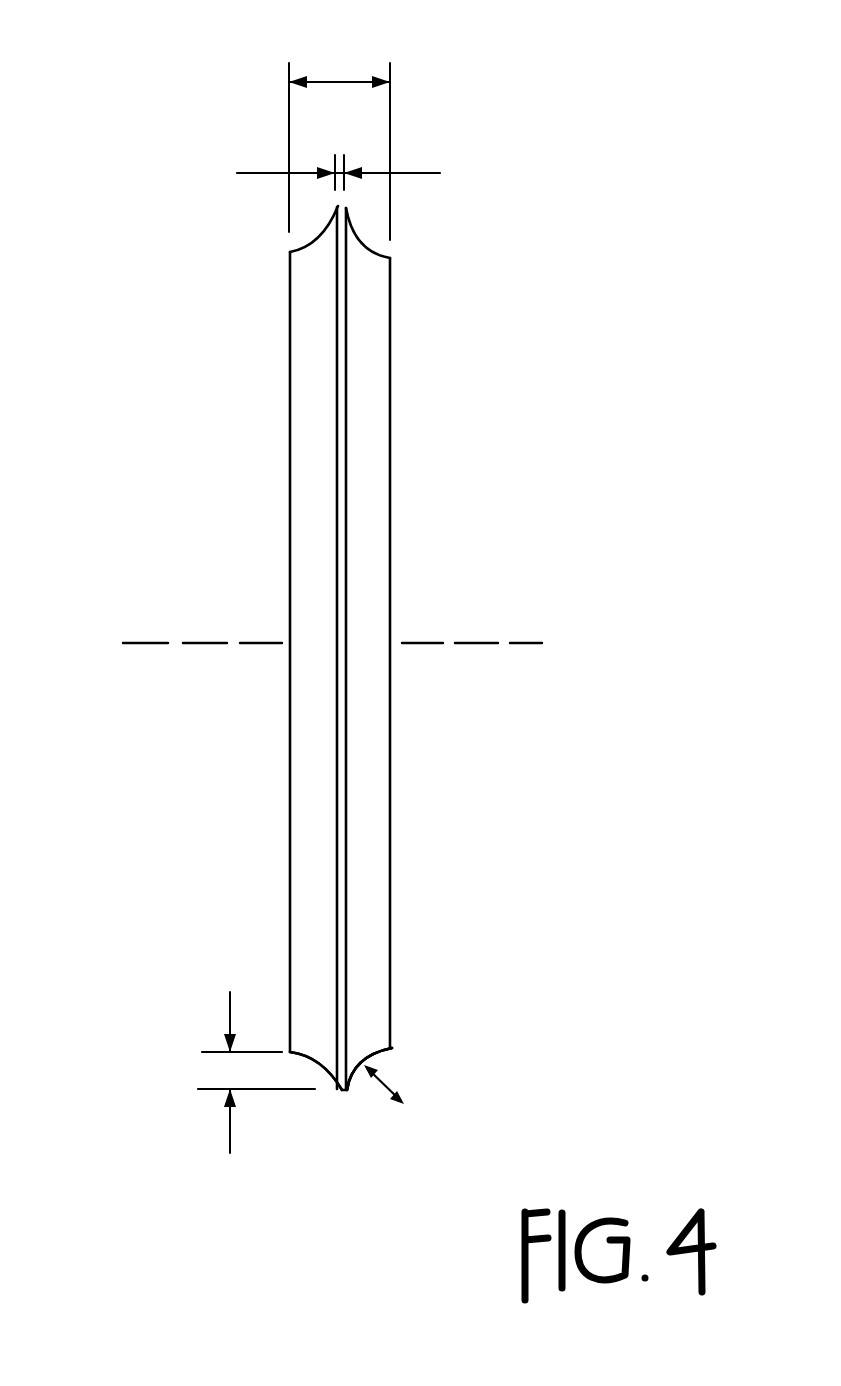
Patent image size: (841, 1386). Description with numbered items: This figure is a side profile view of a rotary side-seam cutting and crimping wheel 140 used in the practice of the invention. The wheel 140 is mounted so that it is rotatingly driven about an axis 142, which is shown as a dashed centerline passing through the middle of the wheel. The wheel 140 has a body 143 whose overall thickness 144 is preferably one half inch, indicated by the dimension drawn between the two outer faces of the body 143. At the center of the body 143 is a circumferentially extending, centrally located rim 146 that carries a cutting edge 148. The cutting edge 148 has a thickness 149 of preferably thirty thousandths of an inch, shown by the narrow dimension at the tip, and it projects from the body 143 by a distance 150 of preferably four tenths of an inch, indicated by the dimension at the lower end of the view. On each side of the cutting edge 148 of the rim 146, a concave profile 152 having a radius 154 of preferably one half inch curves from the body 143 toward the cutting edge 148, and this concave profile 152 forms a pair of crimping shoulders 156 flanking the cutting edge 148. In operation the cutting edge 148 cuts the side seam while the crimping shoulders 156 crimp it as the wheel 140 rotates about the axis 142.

The rotary side-seam cutting and crimping wheel 140 is at (384, 680).
The axis 142 is at (475, 643).
The body 143 is at (389, 320).
The overall thickness 144 is at (330, 80).
The rim 146 is at (345, 1092).
The cutting edge 148 is at (337, 203).
The thickness 149 is at (412, 173).
The distance 150 is at (230, 1125).
The concave profile 152 is at (368, 1048).
The radius 154 is at (387, 1075).
The crimping shoulders 156 is at (312, 1058).